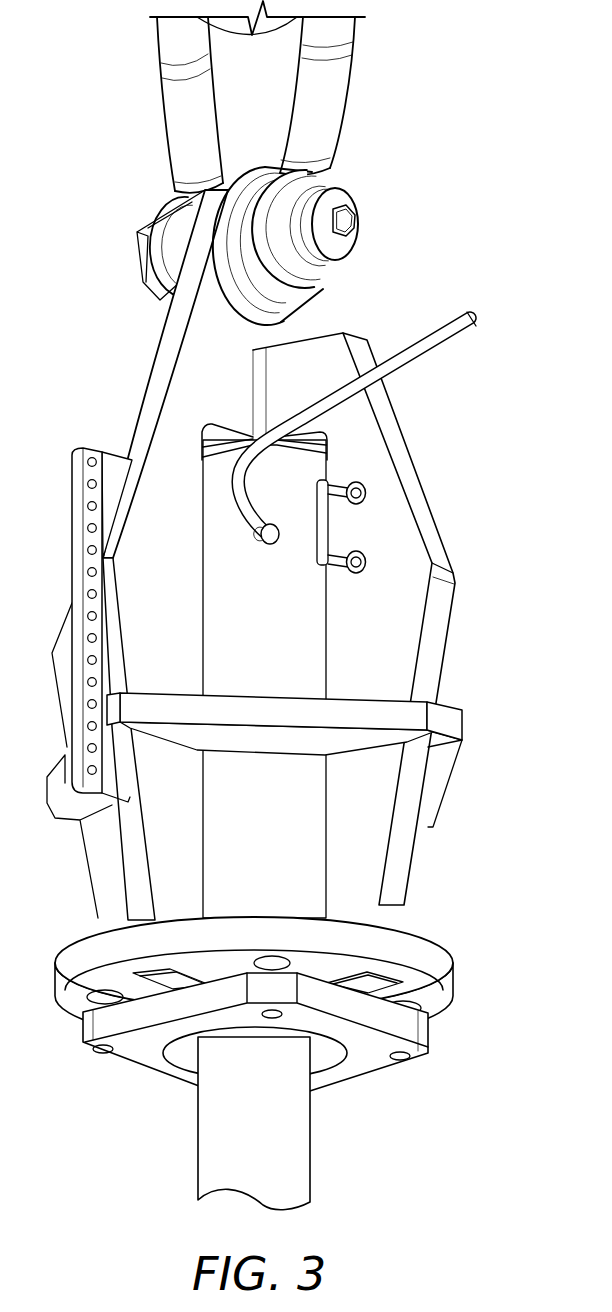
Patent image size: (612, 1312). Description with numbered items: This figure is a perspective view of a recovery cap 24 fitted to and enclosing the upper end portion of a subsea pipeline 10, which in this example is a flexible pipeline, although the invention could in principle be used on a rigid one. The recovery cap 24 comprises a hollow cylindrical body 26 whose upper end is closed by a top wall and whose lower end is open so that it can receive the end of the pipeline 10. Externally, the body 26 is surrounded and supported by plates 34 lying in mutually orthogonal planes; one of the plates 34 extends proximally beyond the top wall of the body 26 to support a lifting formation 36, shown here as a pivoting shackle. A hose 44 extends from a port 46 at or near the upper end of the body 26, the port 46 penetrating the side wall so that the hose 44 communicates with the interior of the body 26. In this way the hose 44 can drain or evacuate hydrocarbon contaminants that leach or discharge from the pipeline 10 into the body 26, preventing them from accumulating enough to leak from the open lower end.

The subsea pipeline 10 is at (210, 1133).
The recovery cap 24 is at (97, 279).
The hollow cylindrical body 26 is at (217, 610).
The plates 34 is at (158, 372).
The lifting formation 36 is at (177, 112).
The hose 44 is at (433, 347).
The port 46 is at (277, 548).